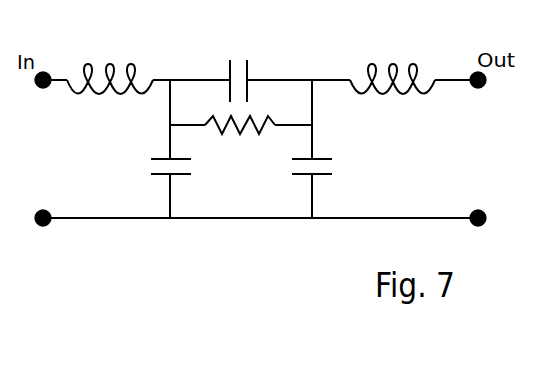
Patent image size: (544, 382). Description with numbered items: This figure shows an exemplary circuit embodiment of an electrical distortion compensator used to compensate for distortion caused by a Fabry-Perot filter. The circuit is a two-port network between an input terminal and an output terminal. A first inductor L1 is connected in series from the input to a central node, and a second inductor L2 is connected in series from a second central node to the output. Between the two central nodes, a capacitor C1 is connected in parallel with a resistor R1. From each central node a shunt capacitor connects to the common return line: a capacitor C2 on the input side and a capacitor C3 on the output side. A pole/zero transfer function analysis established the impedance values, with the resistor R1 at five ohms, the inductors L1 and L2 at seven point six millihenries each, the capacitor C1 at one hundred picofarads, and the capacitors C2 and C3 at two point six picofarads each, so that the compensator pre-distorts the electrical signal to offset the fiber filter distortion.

The inductor L1 is at (110, 62).
The inductor L2 is at (392, 62).
The capacitor C1 is at (240, 69).
The capacitor C2 is at (152, 172).
The capacitor C3 is at (329, 172).
The resistor R1 is at (240, 142).